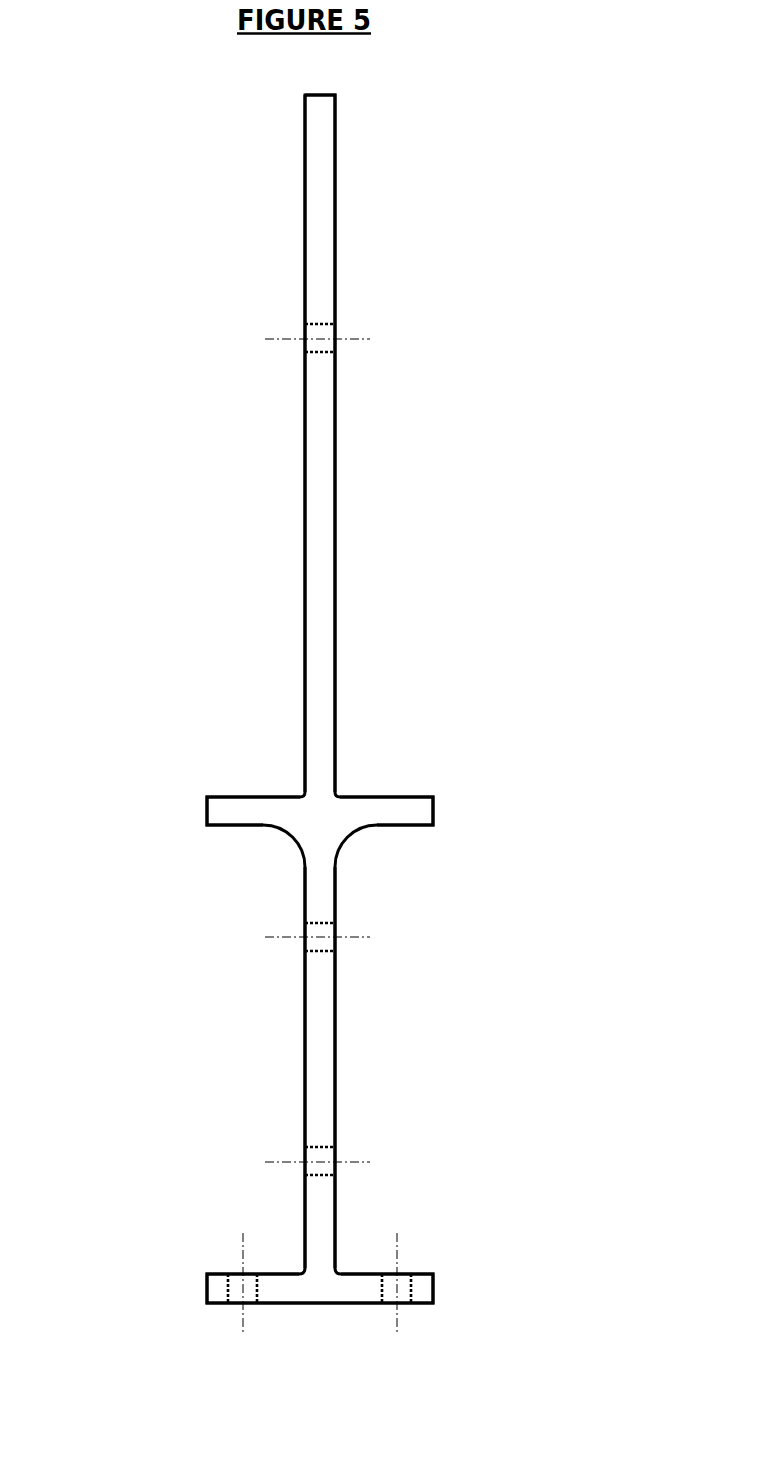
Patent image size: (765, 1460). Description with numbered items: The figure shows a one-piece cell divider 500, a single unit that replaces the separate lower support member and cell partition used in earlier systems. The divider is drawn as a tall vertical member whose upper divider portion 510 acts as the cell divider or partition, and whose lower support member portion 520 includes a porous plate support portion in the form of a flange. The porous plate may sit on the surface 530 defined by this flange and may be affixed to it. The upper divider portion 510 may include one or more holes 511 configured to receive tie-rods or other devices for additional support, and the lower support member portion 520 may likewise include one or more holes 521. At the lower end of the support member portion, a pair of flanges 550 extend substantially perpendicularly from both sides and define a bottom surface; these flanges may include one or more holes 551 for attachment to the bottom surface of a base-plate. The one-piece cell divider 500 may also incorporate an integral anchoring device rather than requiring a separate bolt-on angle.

The one-piece cell divider 500 is at (520, 263).
The upper divider portion 510 is at (335, 577).
The holes 511 is at (305, 352).
The surface 530 is at (407, 797).
The lower support member portion 520 is at (335, 1055).
The holes 521 is at (305, 1147).
The flanges 550 is at (433, 1274).
The holes 551 is at (382, 1303).